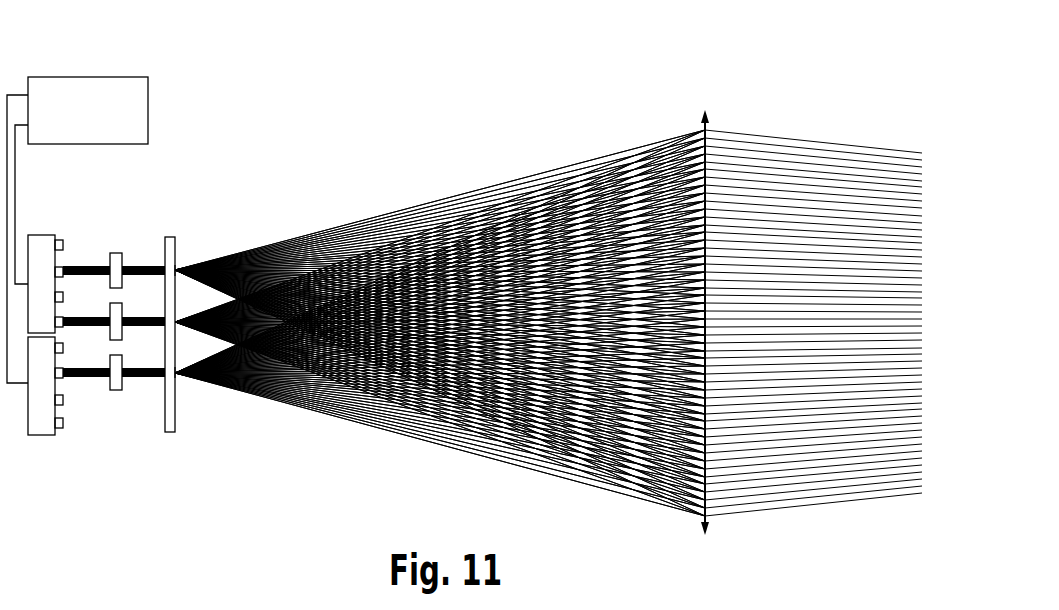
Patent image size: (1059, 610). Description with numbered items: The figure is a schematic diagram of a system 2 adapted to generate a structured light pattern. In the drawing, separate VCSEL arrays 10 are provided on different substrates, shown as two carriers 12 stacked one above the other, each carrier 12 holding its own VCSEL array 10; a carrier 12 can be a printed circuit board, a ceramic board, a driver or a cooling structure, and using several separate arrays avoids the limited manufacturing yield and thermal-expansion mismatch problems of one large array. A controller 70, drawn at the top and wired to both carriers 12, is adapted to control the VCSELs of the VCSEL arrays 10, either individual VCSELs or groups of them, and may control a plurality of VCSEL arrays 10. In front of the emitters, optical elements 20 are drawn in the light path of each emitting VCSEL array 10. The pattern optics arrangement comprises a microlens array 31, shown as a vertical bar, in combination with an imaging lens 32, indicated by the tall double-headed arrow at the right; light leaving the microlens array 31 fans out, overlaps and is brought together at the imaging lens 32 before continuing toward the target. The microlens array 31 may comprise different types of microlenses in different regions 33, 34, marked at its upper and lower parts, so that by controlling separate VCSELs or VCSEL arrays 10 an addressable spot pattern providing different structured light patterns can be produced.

The laser system 2 is at (224, 96).
The controller 70 is at (89, 77).
The carrier 12 is at (40, 235).
The VCSEL array 10 is at (62, 267).
The collimating lens 20 is at (115, 253).
The microlens array 31 is at (168, 237).
The region of the microlens array 33 is at (177, 268).
The region of the microlens array 34 is at (175, 378).
The imaging lens 32 is at (722, 100).